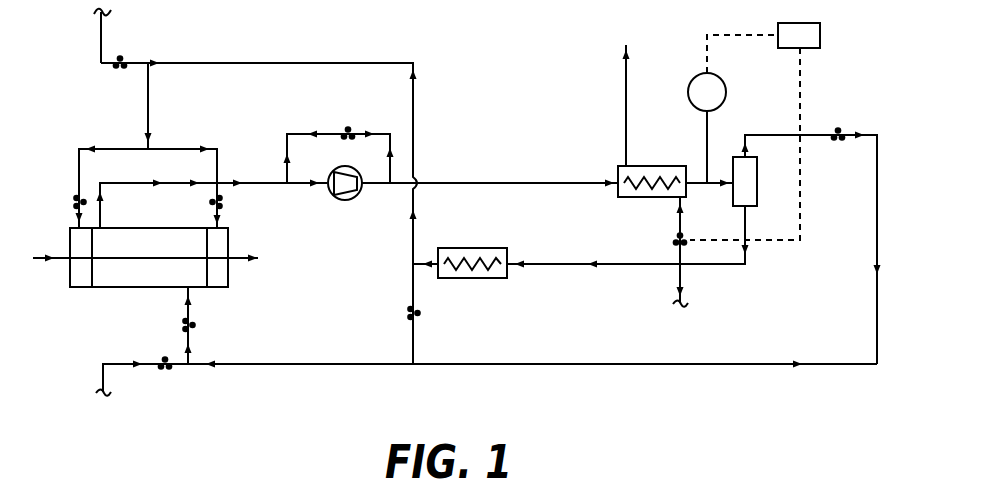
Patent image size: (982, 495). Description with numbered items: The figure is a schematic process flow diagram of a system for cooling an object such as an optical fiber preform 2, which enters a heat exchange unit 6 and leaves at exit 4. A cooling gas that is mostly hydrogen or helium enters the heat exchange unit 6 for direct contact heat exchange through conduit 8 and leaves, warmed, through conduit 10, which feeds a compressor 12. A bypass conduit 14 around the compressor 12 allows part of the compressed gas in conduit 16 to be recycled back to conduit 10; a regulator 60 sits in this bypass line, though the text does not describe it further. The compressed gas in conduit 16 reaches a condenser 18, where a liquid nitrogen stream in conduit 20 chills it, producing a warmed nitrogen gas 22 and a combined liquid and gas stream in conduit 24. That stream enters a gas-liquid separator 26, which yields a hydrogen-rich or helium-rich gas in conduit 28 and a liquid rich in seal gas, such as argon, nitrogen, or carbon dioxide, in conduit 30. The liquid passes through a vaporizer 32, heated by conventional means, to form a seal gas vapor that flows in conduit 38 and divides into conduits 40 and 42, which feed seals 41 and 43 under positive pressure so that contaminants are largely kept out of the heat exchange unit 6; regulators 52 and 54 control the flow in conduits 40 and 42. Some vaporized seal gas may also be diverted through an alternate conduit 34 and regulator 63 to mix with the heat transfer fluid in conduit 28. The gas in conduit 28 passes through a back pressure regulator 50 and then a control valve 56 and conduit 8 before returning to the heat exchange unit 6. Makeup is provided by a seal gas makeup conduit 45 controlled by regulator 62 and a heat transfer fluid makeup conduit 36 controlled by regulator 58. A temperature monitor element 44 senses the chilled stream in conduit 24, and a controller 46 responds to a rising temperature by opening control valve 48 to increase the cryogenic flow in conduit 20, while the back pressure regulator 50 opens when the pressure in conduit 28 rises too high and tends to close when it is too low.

The optical fiber preform 2 is at (42, 262).
The exit 4 is at (236, 262).
The heat exchange unit 6 is at (125, 228).
The conduit 8 is at (195, 305).
The conduit 10 is at (138, 182).
The compressor 12 is at (348, 201).
The bypass conduit 14 is at (297, 126).
The conduit 16 is at (475, 180).
The condenser 18 is at (652, 165).
The conduit 20 is at (686, 283).
The warmed nitrogen gas 22 is at (622, 88).
The conduit 24 is at (720, 190).
The gas-liquid separator 26 is at (757, 178).
The conduit 28 is at (771, 133).
The conduit 30 is at (632, 268).
The vaporizer 32 is at (497, 278).
The alternate conduit 34 is at (411, 285).
The heat transfer fluid makeup conduit 36 is at (103, 362).
The conduit 38 is at (416, 232).
The conduit 40 is at (106, 146).
The seal 41 is at (68, 238).
The conduit 42 is at (185, 146).
The seal 43 is at (232, 238).
The temperature monitor element 44 is at (692, 82).
The seal gas makeup conduit 45 is at (97, 33).
The controller 46 is at (815, 23).
The control valve 48 is at (670, 241).
The back pressure regulator 50 is at (840, 126).
The regulator 52 is at (72, 200).
The regulator 54 is at (232, 203).
The control valve 56 is at (200, 325).
The regulator 58 is at (167, 374).
The valve 60 is at (349, 123).
The regulator 62 is at (126, 53).
The regulator 63 is at (426, 314).